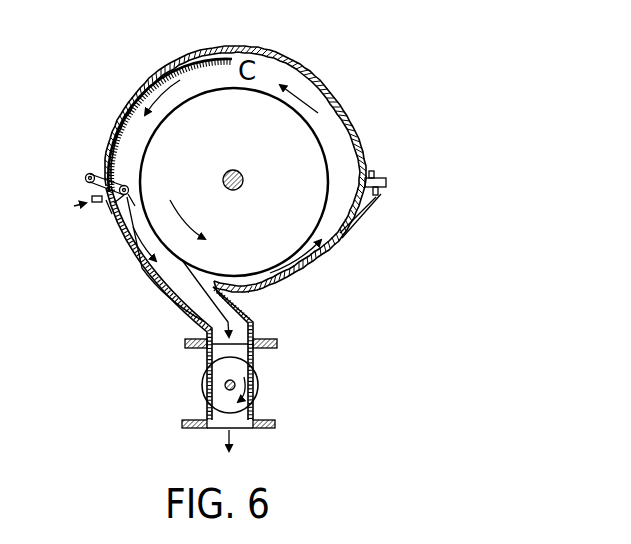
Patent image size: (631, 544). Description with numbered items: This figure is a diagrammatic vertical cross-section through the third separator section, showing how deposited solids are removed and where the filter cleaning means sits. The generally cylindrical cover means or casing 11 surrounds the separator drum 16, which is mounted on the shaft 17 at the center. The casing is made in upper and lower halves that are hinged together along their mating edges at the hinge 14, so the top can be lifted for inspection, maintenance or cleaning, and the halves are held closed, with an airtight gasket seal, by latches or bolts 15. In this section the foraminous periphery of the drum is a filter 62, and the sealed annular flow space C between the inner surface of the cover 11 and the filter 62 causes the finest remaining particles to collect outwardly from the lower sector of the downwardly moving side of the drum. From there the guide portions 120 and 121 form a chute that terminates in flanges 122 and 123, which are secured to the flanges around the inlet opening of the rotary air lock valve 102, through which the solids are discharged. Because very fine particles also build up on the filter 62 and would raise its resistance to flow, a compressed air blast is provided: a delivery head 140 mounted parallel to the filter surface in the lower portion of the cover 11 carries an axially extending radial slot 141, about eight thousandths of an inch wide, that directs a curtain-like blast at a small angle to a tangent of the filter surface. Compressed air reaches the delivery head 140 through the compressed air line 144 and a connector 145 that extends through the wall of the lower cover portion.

The cover means or casing 11 is at (268, 50).
The separator drum 16 is at (176, 72).
The filter 62 is at (216, 89).
The shaft 17 is at (243, 180).
The latches or bolts 15 is at (378, 177).
The hinge 14 is at (86, 176).
The delivery head 140 is at (109, 165).
The compressed air line 144 is at (90, 196).
The connector 145 is at (106, 214).
The radial slot 141 is at (118, 226).
The guide portion 120 is at (158, 292).
The guide portion 121 is at (256, 320).
The flange 122 is at (186, 341).
The flange 123 is at (277, 343).
The rotary air lock valve 102 is at (257, 388).